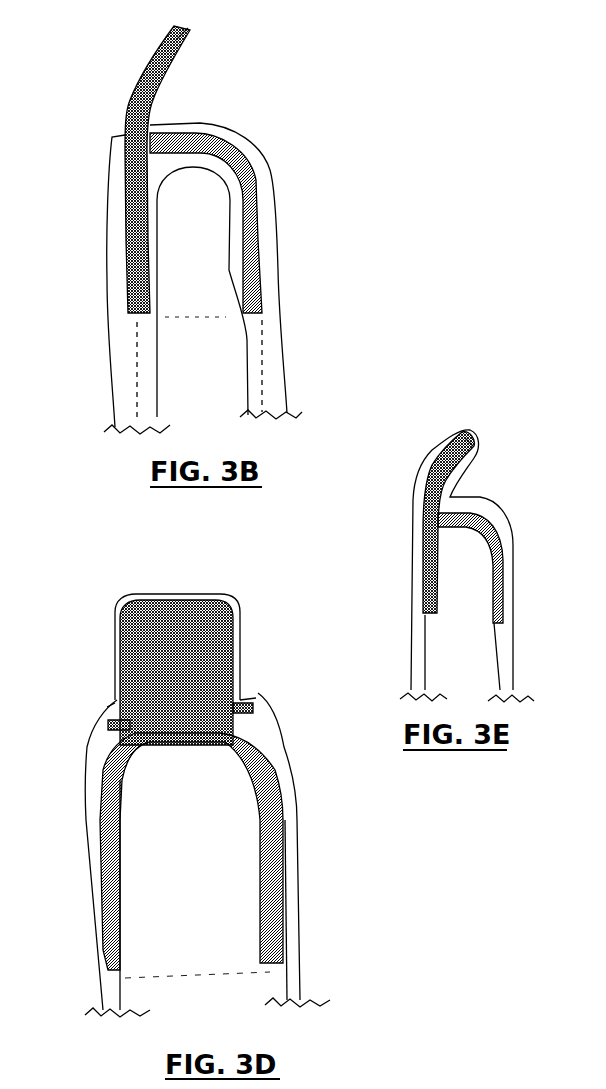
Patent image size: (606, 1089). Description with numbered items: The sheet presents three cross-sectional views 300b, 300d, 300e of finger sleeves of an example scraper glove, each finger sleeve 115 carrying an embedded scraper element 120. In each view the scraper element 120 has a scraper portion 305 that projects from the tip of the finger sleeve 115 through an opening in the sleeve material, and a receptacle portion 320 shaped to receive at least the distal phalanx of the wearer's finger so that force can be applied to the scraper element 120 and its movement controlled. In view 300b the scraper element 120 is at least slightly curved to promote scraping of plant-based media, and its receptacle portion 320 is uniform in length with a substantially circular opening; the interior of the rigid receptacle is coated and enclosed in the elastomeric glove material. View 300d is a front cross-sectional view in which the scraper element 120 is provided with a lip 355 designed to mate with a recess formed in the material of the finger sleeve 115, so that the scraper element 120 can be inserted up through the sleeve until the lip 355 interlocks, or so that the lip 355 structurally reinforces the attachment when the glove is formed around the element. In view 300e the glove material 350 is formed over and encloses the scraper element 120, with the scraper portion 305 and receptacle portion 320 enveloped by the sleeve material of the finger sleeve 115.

In FIG. 3B, the finger sleeve 115 is at (104, 347).
In FIG. 3E, the finger sleeve 115 is at (404, 646).
In FIG. 3D, the finger sleeve 115 is at (79, 914).
In FIG. 3B, the scraper element 120 is at (130, 60).
In FIG. 3E, the scraper element 120 is at (427, 473).
In FIG. 3D, the scraper element 120 is at (99, 630).
In FIG. 3B, the scraper portion 305 is at (171, 60).
In FIG. 3E, the scraper portion 305 is at (455, 468).
In FIG. 3D, the scraper portion 305 is at (245, 644).
In FIG. 3B, the receptacle portion 320 is at (262, 205).
In FIG. 3E, the receptacle portion 320 is at (505, 540).
In FIG. 3D, the receptacle portion 320 is at (272, 770).
In FIG. 3E, the glove material 350 is at (410, 513).
In FIG. 3D, the lip 355 is at (118, 718).
In FIG. 3B, the cross-sectional view 300b is at (388, 42).
In FIG. 3D, the cross-sectional view 300d is at (382, 964).
In FIG. 3E, the cross-sectional view 300e is at (481, 403).